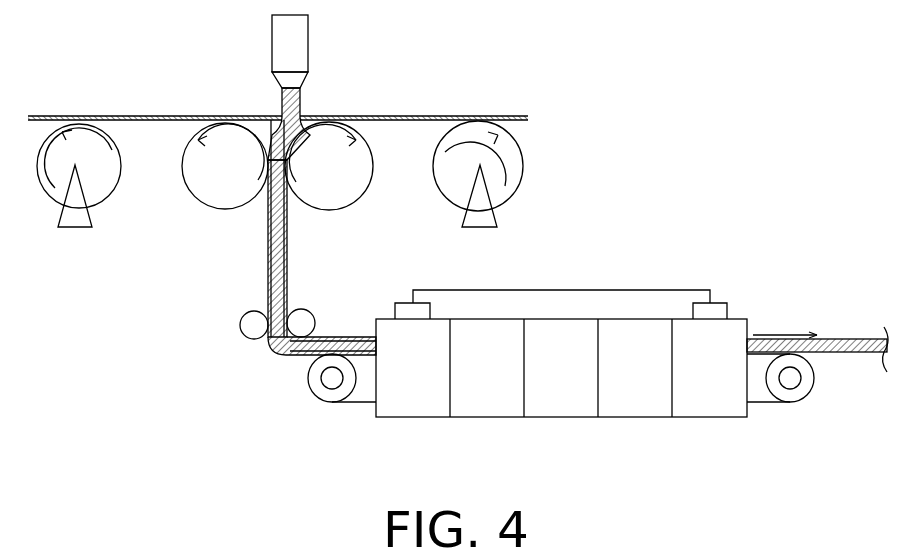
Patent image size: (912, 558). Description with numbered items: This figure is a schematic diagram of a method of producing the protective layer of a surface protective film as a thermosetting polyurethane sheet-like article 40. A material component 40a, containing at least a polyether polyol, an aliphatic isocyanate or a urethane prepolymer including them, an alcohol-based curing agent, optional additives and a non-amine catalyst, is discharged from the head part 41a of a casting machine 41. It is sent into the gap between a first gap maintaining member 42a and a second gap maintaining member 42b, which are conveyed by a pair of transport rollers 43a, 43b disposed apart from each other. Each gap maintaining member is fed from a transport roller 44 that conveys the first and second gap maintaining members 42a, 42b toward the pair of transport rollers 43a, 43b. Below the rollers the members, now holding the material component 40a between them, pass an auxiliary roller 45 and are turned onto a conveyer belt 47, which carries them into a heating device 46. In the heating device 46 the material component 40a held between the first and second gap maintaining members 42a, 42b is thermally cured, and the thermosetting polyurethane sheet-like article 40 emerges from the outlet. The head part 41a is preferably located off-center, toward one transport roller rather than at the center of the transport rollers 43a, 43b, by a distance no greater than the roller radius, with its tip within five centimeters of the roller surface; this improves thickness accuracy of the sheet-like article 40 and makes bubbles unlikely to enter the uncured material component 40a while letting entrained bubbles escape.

The thermosetting polyurethane sheet-like article 40 is at (853, 357).
The material component 40a is at (280, 113).
The casting machine 41 is at (300, 43).
The head part 41a is at (298, 80).
The first gap maintaining member 42a is at (157, 115).
The second gap maintaining member 42b is at (405, 117).
The first transport roller 43a is at (217, 203).
The second transport roller 43b is at (343, 192).
The transport roller 44 is at (102, 187).
The auxiliary roller 45 is at (252, 323).
The heating device 46 is at (633, 410).
The conveyer belt 47 is at (325, 400).